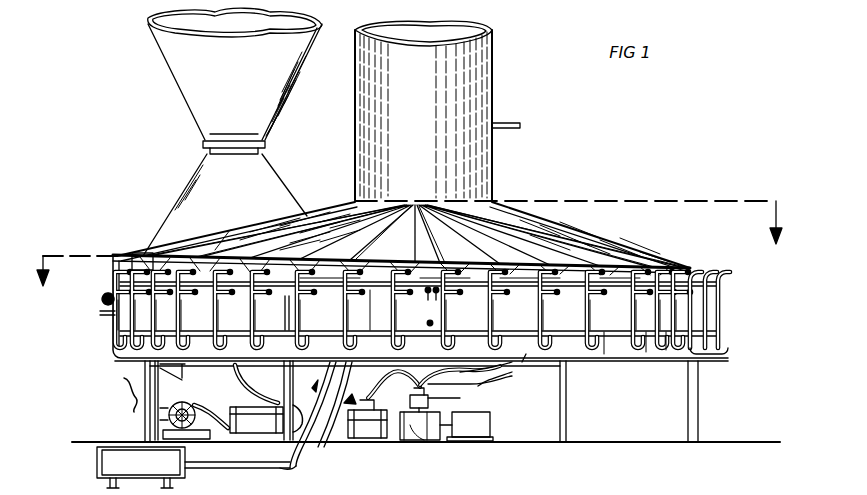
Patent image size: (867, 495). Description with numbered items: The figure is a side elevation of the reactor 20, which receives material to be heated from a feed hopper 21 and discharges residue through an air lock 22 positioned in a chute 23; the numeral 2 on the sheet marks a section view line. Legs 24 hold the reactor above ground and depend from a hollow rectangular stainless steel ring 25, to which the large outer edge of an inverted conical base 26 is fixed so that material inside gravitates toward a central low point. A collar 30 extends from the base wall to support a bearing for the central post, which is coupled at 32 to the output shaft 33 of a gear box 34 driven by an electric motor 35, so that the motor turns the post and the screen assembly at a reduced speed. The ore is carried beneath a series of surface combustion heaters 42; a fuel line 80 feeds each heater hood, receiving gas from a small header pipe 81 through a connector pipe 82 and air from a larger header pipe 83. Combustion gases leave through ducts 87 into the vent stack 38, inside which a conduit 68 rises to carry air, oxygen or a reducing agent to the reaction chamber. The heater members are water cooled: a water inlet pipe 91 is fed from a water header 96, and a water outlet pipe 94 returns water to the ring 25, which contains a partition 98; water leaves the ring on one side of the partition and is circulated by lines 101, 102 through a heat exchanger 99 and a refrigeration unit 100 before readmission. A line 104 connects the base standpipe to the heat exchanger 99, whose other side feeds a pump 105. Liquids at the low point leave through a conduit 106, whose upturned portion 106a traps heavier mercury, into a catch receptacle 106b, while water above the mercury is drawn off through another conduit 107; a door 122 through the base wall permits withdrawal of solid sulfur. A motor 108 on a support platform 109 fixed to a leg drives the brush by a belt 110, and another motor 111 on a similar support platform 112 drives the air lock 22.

The reactor 20 is at (626, 137).
The section line 2- 2 is at (409, 231).
The feed hopper 21 is at (220, 93).
The vent stack 38 is at (404, 126).
The conduit 68 is at (498, 125).
The air lock 22 is at (118, 324).
The surface combustion heaters 42 is at (642, 270).
The ducts 87 is at (435, 205).
The belt 110 is at (118, 266).
The motor 108 is at (108, 297).
The support platform 109 is at (100, 313).
The partition 98 is at (279, 299).
The water outlet pipe 94 is at (426, 300).
The water inlet pipe 91 is at (433, 323).
The ring 25 is at (374, 304).
The fuel line 80 is at (712, 300).
The legs 24 is at (142, 425).
The chute 23 is at (122, 383).
The motor 111 is at (184, 372).
The support platform 112 is at (183, 408).
The pump 105 is at (196, 400).
The line 101 is at (270, 400).
The heat exchanger 99 is at (256, 420).
The refrigeration unit 100 is at (126, 471).
The line 102 is at (302, 470).
The line 104 is at (336, 368).
The conduit 107 is at (384, 398).
The upturned portion 106a is at (382, 371).
The conduit 106 is at (411, 399).
The catch receptacle 106b is at (367, 419).
The gear box 34 is at (420, 442).
The output shaft 33 is at (422, 442).
The electric motor 35 is at (478, 430).
The coupling 32 is at (458, 400).
The collar 30 is at (442, 385).
The conical base 26 is at (470, 371).
The door 122 is at (478, 388).
The header pipe 83 is at (524, 358).
The connector pipe 82 is at (604, 354).
The header pipe 81 is at (646, 352).
The water header 96 is at (666, 350).